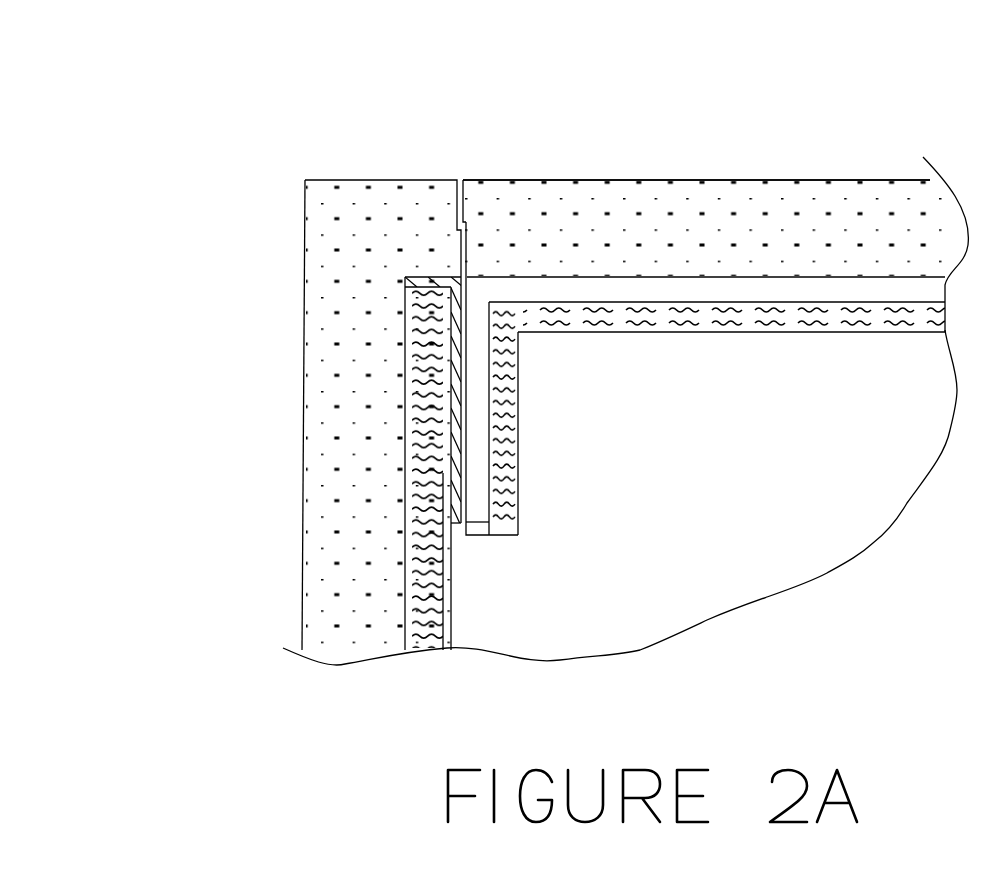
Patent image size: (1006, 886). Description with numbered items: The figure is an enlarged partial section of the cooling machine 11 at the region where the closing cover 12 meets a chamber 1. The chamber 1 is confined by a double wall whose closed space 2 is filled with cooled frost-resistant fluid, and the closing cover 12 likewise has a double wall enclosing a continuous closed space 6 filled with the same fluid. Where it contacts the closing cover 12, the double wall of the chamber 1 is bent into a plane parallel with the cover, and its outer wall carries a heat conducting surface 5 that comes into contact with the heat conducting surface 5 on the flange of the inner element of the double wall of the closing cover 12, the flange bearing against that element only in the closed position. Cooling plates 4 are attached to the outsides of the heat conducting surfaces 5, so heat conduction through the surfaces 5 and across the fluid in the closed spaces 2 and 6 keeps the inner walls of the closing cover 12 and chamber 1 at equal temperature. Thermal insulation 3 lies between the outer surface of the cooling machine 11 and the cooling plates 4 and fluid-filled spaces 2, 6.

The chamber 1 is at (784, 506).
The closed space 2 is at (887, 317).
The thermal insulation 3 is at (172, 500).
The cooling plate 4 is at (545, 290).
The heat conducting surface 5 is at (460, 440).
The closed space 6 is at (427, 347).
The cooling machine 11 is at (660, 181).
The closing cover 12 is at (305, 265).